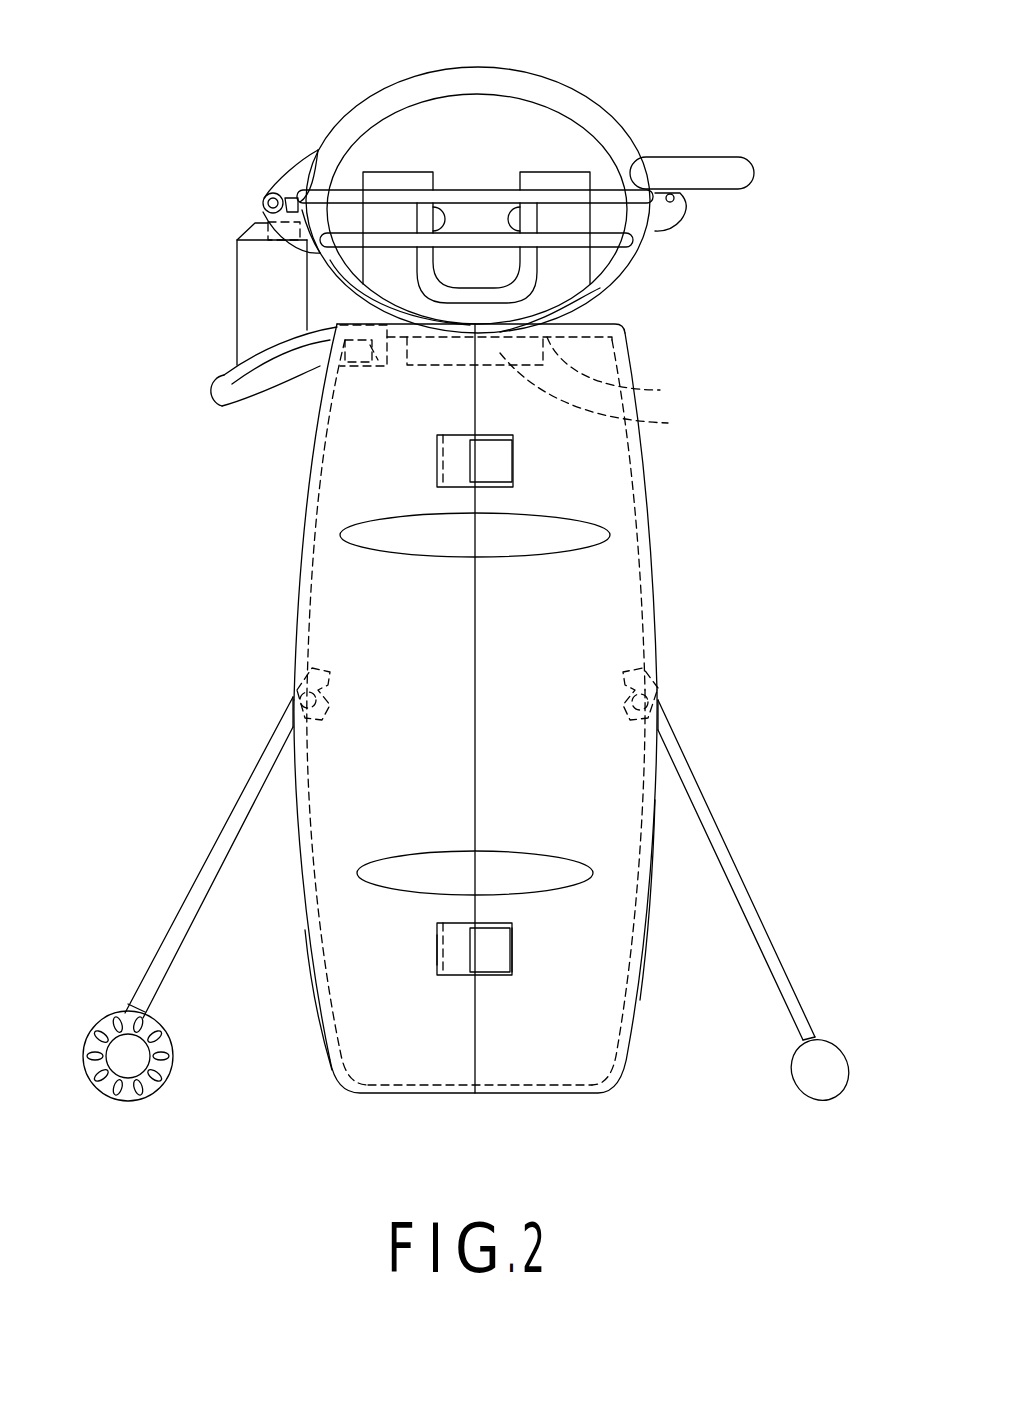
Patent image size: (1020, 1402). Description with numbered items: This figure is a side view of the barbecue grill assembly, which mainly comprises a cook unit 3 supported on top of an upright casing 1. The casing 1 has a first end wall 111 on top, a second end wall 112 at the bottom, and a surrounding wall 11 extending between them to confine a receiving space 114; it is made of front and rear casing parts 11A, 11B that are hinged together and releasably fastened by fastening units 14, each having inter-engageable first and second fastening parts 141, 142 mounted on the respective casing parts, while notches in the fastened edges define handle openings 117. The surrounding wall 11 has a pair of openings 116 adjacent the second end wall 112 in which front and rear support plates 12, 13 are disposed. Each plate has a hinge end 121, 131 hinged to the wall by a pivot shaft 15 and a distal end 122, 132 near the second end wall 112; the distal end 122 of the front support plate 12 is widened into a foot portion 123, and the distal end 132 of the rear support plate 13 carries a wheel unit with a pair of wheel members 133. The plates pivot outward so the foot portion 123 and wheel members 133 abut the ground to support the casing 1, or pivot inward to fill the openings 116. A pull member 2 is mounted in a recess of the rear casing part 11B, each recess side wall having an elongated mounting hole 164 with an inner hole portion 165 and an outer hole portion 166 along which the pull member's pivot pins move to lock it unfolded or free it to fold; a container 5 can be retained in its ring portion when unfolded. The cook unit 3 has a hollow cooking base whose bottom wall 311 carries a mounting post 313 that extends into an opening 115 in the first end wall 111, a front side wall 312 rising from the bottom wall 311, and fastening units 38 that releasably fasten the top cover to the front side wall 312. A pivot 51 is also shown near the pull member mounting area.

The casing 1 is at (683, 653).
The pull member 2 is at (210, 407).
The cook unit 3 is at (577, 73).
The container 5 is at (253, 270).
The surrounding wall 11 is at (630, 1023).
The front casing part 11A is at (647, 883).
The rear casing part 11B is at (347, 1017).
The front support plate 12 is at (752, 867).
The rear support plate 13 is at (193, 887).
The fastening unit 14 is at (497, 448).
The pivot shaft 15 is at (295, 665).
The fastening unit 38 is at (688, 198).
The pivot 51 is at (255, 220).
The first end wall 111 is at (590, 317).
The second end wall 112 is at (570, 1095).
The receiving space 114 is at (623, 572).
The opening 115 is at (560, 371).
The opening 116 is at (633, 922).
The handle opening 117 is at (548, 533).
The hinge end 121 is at (660, 727).
The distal end 122 is at (807, 1023).
The foot portion 123 is at (830, 1077).
The hinge end 131 is at (293, 720).
The distal end 132 is at (137, 997).
The wheel member 133 is at (157, 1090).
The first fastening part 141 is at (457, 948).
The second fastening part 142 is at (500, 957).
The mounting hole 164 is at (357, 352).
The inner hole portion 165 is at (372, 356).
The outer hole portion 166 is at (340, 348).
The bottom wall 311 is at (600, 288).
The front side wall 312 is at (657, 232).
The mounting post 313 is at (614, 399).